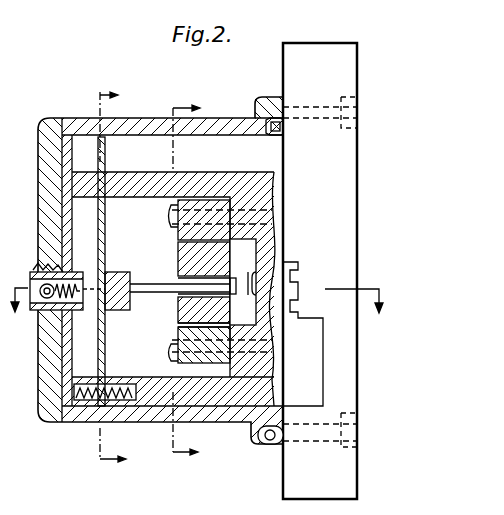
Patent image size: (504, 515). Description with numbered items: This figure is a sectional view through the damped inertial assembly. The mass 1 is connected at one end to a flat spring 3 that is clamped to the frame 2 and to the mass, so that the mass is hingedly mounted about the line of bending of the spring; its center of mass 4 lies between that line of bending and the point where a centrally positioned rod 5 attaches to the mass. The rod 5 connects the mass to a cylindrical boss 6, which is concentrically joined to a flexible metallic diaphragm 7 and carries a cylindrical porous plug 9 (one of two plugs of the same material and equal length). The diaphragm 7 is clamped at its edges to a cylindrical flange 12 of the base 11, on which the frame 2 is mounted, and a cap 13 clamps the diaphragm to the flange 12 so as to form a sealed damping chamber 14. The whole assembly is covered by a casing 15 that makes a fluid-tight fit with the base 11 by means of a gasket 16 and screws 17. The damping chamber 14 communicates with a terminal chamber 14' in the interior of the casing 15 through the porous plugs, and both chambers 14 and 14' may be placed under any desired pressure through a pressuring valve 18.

The mass 1 is at (183, 250).
The frame 2 is at (218, 187).
The flat spring 3 is at (193, 314).
The center of mass 4 is at (121, 280).
The rod 5 is at (165, 283).
The cylindrical boss 6 is at (131, 270).
The flexible metallic diaphragm 7 is at (106, 203).
The porous plug 9 is at (95, 302).
The base 11 is at (345, 72).
The cylindrical flange 12 is at (150, 392).
The cap 13 is at (87, 170).
The damping chamber 14 is at (147, 281).
The terminal chamber 14' is at (200, 284).
The casing 15 is at (0, 122).
The gasket 16 is at (284, 130).
The screws 17 is at (378, 420).
The pressuring valve 18 is at (36, 272).